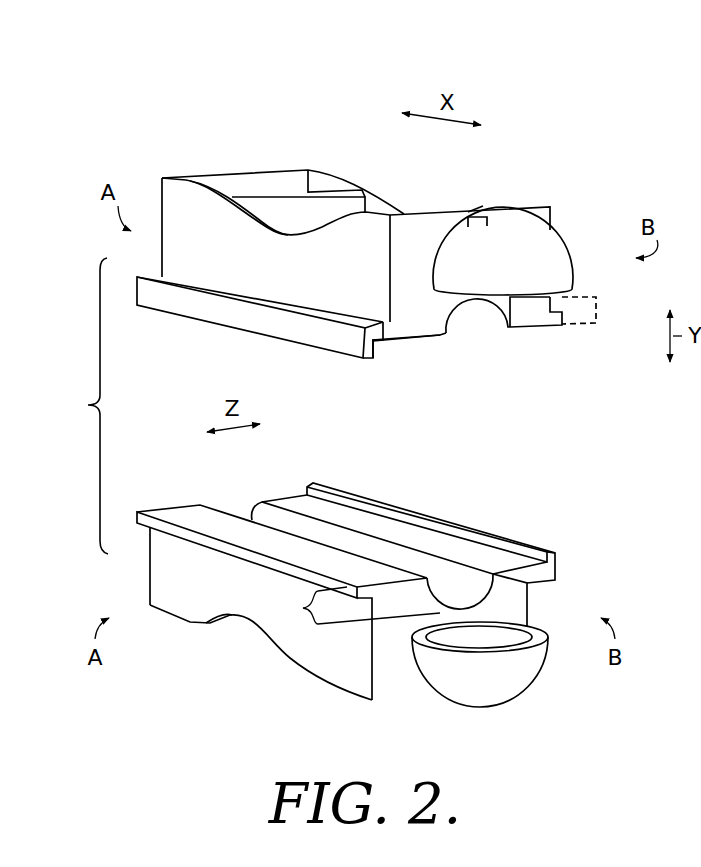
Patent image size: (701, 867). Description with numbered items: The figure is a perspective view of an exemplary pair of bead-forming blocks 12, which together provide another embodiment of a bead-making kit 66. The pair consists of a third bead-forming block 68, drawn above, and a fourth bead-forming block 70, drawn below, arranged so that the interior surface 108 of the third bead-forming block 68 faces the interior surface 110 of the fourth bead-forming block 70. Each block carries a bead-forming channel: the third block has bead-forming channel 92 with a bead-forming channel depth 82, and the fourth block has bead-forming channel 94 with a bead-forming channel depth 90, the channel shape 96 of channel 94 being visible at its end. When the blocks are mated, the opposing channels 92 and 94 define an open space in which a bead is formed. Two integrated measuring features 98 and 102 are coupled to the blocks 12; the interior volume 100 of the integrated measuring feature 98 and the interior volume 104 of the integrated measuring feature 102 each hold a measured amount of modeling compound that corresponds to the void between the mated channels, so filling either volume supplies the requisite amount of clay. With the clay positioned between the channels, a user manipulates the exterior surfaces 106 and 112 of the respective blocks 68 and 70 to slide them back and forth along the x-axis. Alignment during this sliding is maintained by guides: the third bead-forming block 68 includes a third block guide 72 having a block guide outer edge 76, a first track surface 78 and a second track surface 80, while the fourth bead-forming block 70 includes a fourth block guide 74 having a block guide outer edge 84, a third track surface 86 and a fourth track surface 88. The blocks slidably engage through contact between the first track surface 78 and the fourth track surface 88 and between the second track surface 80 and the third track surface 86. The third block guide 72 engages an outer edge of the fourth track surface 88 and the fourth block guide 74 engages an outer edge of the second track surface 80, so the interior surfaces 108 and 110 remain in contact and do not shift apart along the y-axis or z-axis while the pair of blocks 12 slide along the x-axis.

The pair of bead-forming blocks 12 is at (86, 405).
The bead-making kit 66 is at (556, 172).
The third bead-forming block 68 is at (172, 178).
The fourth bead-forming block 70 is at (173, 614).
The third block guide 72 is at (323, 337).
The fourth block guide 74 is at (557, 569).
The block guide outer edge 76 is at (372, 362).
The first track surface 78 is at (408, 345).
The second track surface 80 is at (545, 332).
The bead-forming channel depth 82 is at (597, 310).
The block guide outer edge 84 is at (553, 548).
The third track surface 86 is at (511, 563).
The fourth track surface 88 is at (374, 580).
The bead-forming channel depth 90 is at (312, 598).
The bead-forming channel 92 is at (475, 312).
The bead-forming channel 94 is at (460, 606).
The channel shape 96 is at (282, 521).
The integrated measuring feature 98 is at (557, 262).
The interior volume 100 is at (519, 300).
The integrated measuring feature 102 is at (522, 685).
The interior volume 104 is at (483, 641).
The exterior surface 106 is at (359, 160).
The interior surface 108 is at (220, 340).
The interior surface 110 is at (393, 482).
The exterior surface 112 is at (308, 690).